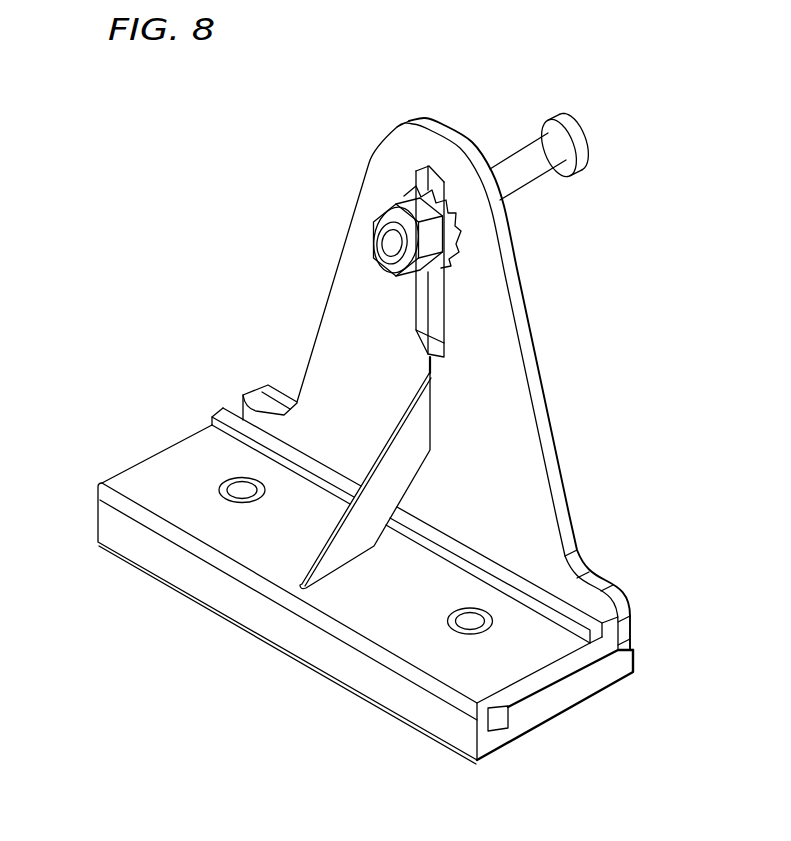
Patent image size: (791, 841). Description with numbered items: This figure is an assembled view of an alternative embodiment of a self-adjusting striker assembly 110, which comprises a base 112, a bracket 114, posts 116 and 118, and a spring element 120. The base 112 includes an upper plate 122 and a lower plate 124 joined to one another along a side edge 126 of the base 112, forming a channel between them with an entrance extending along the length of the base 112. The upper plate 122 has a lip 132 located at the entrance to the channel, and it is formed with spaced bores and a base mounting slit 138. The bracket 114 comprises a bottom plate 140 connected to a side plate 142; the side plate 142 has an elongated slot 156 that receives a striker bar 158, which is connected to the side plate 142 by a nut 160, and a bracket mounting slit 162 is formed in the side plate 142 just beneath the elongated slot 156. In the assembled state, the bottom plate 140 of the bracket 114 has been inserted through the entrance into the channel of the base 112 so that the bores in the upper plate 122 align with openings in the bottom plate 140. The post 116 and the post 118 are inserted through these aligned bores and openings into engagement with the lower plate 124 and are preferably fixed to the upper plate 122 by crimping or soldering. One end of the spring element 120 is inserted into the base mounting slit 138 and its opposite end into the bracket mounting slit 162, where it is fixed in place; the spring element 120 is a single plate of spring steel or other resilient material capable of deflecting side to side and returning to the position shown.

The self-adjusting striker assembly 110 is at (155, 272).
The base 112 is at (95, 415).
The bracket 114 is at (620, 314).
The post 116 is at (227, 499).
The post 118 is at (452, 629).
The spring element 120 is at (398, 470).
The upper plate 122 is at (167, 497).
The lower plate 124 is at (520, 724).
The side edge 126 is at (233, 597).
The lip 132 is at (222, 410).
The base mounting slit 138 is at (301, 586).
The bottom plate 140 is at (577, 673).
The side plate 142 is at (550, 421).
The elongated slot 156 is at (434, 285).
The striker bar 158 is at (533, 143).
The nut 160 is at (372, 212).
The bracket mounting slit 162 is at (429, 358).